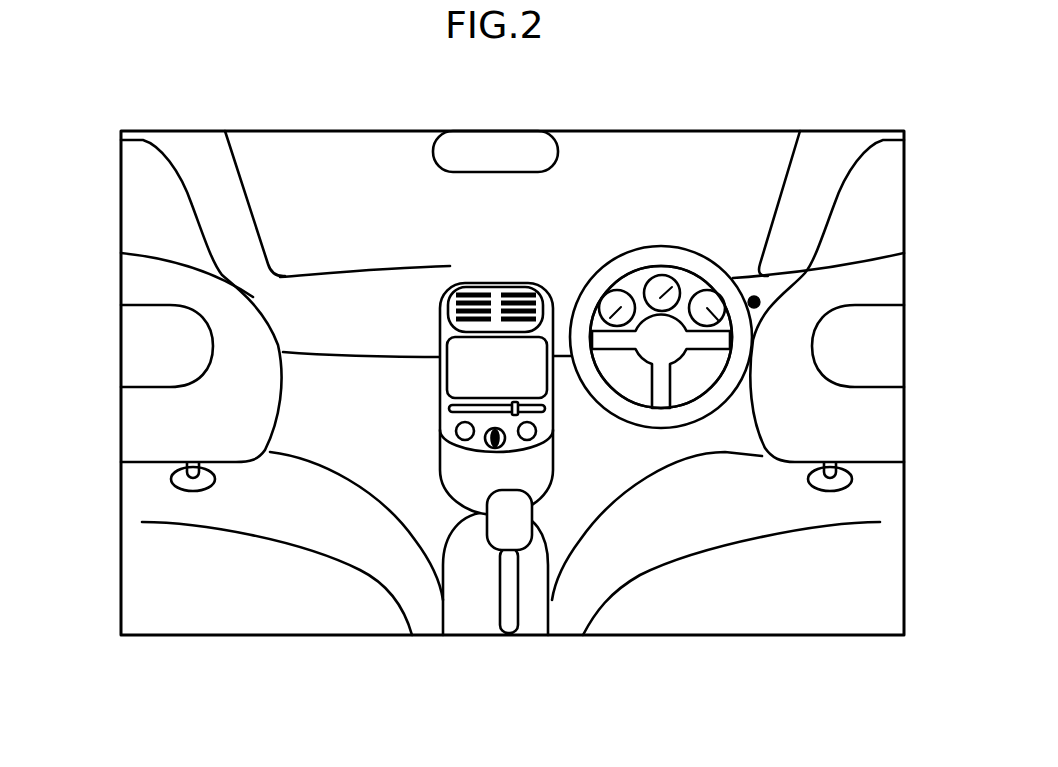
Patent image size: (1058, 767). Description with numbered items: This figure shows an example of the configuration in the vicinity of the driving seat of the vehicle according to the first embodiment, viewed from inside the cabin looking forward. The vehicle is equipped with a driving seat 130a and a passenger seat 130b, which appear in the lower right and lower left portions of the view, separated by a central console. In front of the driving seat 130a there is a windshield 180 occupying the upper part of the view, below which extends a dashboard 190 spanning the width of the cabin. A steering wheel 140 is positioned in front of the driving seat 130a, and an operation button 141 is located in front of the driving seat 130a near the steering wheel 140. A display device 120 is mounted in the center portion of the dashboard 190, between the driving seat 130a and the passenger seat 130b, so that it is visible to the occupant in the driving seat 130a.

The display device 120 is at (457, 388).
The driving seat 130a is at (763, 622).
The passenger seat 130b is at (225, 622).
The steering wheel 140 is at (666, 246).
The operation button 141 is at (759, 299).
The windshield 180 is at (300, 188).
The dashboard 190 is at (363, 308).